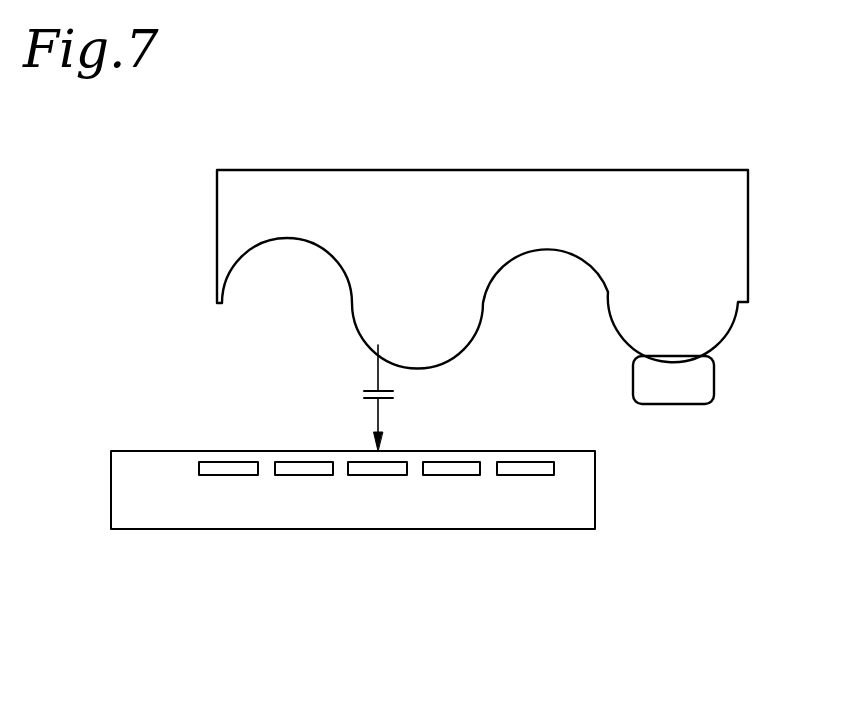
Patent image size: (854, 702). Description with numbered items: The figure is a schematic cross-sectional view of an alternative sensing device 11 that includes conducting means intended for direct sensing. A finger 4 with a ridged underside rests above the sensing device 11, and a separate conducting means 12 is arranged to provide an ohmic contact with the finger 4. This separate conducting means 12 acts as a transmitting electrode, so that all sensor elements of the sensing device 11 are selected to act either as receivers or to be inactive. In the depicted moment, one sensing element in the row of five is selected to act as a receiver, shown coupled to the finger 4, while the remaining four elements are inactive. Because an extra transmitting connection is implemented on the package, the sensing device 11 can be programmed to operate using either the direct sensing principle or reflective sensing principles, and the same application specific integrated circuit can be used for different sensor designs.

The finger 4 is at (748, 235).
The separate conducting means 12 is at (715, 377).
The sensing device 11 is at (699, 544).